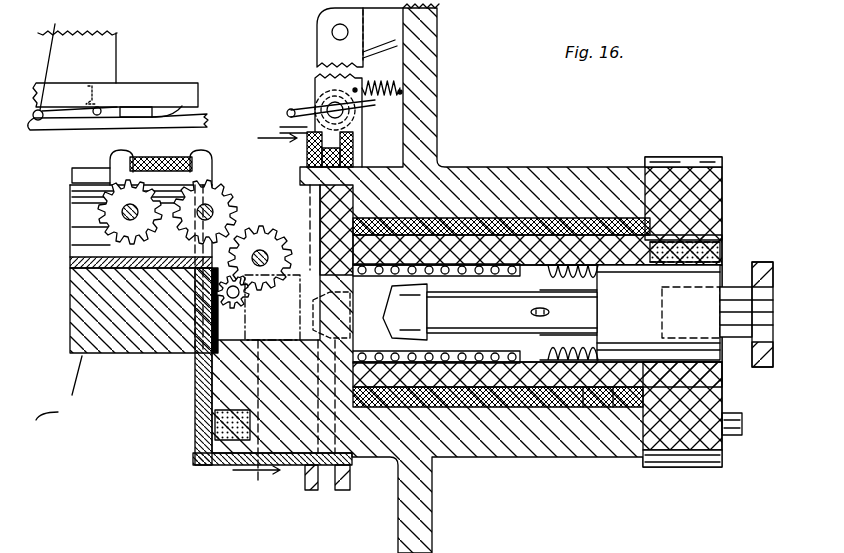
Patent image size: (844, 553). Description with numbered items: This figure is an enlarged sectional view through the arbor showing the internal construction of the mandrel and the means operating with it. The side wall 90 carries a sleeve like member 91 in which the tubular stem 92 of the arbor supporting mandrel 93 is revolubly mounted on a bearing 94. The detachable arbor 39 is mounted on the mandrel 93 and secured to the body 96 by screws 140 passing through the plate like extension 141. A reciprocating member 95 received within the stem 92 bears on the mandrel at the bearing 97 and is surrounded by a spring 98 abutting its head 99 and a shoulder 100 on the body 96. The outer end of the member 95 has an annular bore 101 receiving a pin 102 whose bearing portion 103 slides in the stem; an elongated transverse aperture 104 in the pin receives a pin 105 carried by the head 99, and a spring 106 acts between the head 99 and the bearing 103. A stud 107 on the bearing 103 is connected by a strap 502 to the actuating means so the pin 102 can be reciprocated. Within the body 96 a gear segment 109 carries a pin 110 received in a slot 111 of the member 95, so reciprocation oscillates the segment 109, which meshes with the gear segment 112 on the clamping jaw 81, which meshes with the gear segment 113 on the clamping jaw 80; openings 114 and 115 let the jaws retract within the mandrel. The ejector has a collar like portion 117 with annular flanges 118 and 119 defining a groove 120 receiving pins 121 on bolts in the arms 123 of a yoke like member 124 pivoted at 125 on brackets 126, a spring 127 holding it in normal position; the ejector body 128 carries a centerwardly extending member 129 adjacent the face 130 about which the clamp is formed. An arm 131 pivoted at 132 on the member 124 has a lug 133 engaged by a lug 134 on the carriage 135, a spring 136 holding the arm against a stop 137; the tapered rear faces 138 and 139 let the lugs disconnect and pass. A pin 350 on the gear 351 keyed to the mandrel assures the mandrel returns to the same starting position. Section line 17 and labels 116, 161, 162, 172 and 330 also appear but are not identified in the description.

The section line 17 is at (269, 314).
The arbor 39 is at (70, 316).
The clamping jaw 80 is at (116, 160).
The clamping jaw 81 is at (213, 148).
The side wall 90 is at (456, 546).
The sleeve like member 91 is at (466, 452).
The stem 92 is at (614, 405).
The mandrel 93 is at (222, 466).
The bearing 94 is at (584, 405).
The reciprocating member 95 is at (496, 400).
The body 96 is at (212, 428).
The bearing 97 is at (305, 340).
The spring 98 is at (440, 250).
The head 99 is at (520, 260).
The shoulder 100 is at (385, 400).
The annular bore 101 is at (421, 312).
The pin 102 is at (512, 312).
The bearing portion 103 is at (647, 160).
The elongated transverse aperture 104 is at (546, 300).
The pin 105 is at (520, 321).
The spring 106 is at (604, 278).
The stud 107 is at (737, 290).
The gear segment 109 is at (142, 356).
The pin 110 is at (190, 354).
The slot 111 is at (232, 308).
The gear segment 112 is at (141, 269).
The gear segment 113 is at (108, 238).
The opening 114 is at (240, 163).
The opening 115 is at (72, 181).
The gear 116 is at (260, 228).
The collar like portion 117 is at (300, 470).
The annular flange 118 is at (310, 476).
The annular flange 119 is at (344, 490).
The groove 120 is at (314, 490).
The pin 121 is at (300, 325).
The arm 123 is at (316, 162).
The yoke like member 124 is at (362, 62).
The pivot 125 is at (348, 32).
The bracket 126 is at (380, 55).
The spring 127 is at (402, 93).
The ejector body 128 is at (206, 466).
The centerwardly extending member 129 is at (194, 455).
The face 130 is at (61, 388).
The arm 131 is at (201, 114).
The pivotal mounting 132 is at (343, 110).
The lug 133 is at (118, 105).
The lug 134 is at (153, 114).
The carriage 135 is at (117, 40).
The spring 136 is at (291, 108).
The stop 137 is at (57, 62).
The rear face 138 is at (97, 115).
The rear face 139 is at (181, 108).
The screw 140 is at (195, 465).
The plate like extension 141 is at (194, 400).
The member 161 is at (197, 547).
The member 162 is at (81, 547).
The member 172 is at (235, 547).
The plate 330 is at (72, 263).
The pin 350 is at (735, 436).
The gear 351 is at (700, 466).
The strap 502 is at (762, 262).